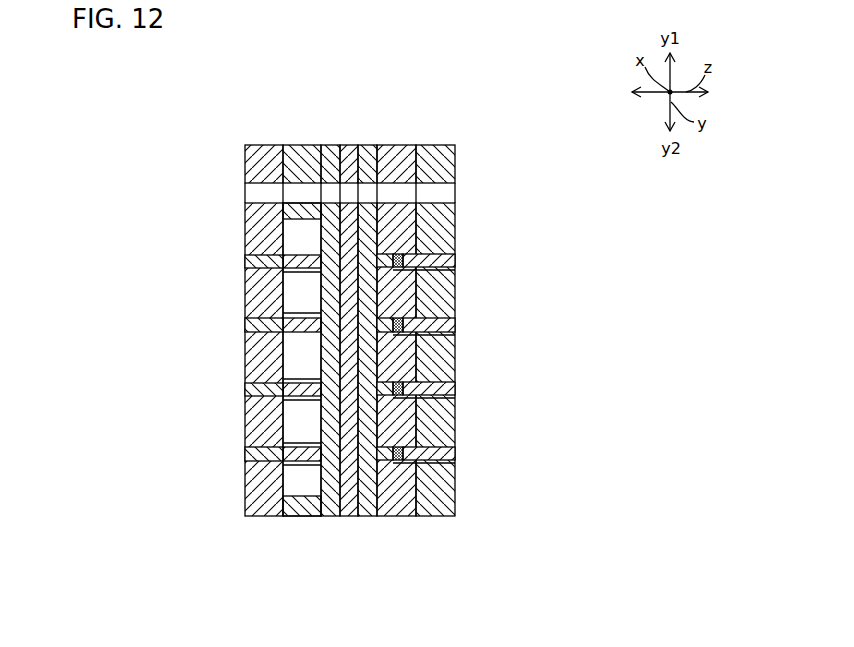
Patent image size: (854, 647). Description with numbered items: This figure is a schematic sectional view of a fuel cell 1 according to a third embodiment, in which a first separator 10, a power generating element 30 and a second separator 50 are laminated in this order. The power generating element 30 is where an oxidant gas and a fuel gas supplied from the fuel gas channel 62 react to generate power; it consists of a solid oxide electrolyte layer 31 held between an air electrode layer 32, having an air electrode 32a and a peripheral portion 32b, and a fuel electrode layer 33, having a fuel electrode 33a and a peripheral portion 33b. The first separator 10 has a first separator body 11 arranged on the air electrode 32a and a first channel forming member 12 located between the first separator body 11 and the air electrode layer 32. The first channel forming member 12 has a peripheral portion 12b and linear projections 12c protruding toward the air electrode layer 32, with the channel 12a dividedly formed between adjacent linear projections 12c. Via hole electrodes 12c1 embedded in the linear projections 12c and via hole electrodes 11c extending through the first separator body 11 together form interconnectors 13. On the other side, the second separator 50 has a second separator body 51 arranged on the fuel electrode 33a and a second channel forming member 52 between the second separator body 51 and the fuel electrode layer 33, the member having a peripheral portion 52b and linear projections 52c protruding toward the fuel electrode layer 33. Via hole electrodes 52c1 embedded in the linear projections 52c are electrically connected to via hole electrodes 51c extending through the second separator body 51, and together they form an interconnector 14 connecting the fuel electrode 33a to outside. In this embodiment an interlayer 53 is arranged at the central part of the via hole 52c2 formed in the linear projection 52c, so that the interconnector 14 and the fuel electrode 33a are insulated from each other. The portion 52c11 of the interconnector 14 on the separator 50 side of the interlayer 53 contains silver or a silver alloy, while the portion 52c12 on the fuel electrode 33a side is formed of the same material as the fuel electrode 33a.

The fuel cell 1 is at (506, 92).
The first separator 10 is at (217, 590).
The first separator body 11 is at (262, 519).
The via hole electrodes 11c is at (245, 260).
The first channel forming member 12 is at (298, 519).
The channel 12a is at (312, 252).
The peripheral portion 12b is at (302, 143).
The linear projections 12c is at (303, 467).
The via hole electrodes 12c1 is at (297, 444).
The interconnectors 13 is at (245, 327).
The interconnector 14 is at (458, 388).
The power generating element 30 is at (298, 590).
The solid oxide electrolyte layer 31 is at (350, 517).
The air electrode layer 32 is at (335, 519).
The air electrode 32a is at (321, 247).
The peripheral portion 32b is at (347, 144).
The fuel electrode layer 33 is at (367, 519).
The fuel electrode 33a is at (379, 227).
The peripheral portion 33b is at (378, 165).
The second separator 50 is at (425, 590).
The second separator body 51 is at (442, 519).
The via hole electrodes 51c is at (442, 343).
The second channel forming member 52 is at (407, 519).
The peripheral portion 52b is at (397, 144).
The linear projections 52c is at (391, 519).
The via hole electrodes 52c1 is at (406, 400).
The portion of the interconnector 52c11 is at (408, 462).
The portion of the interconnector 52c12 is at (392, 466).
The via hole 52c2 is at (440, 322).
The interlayer 53 is at (403, 261).
The fuel gas channel 62 is at (260, 187).